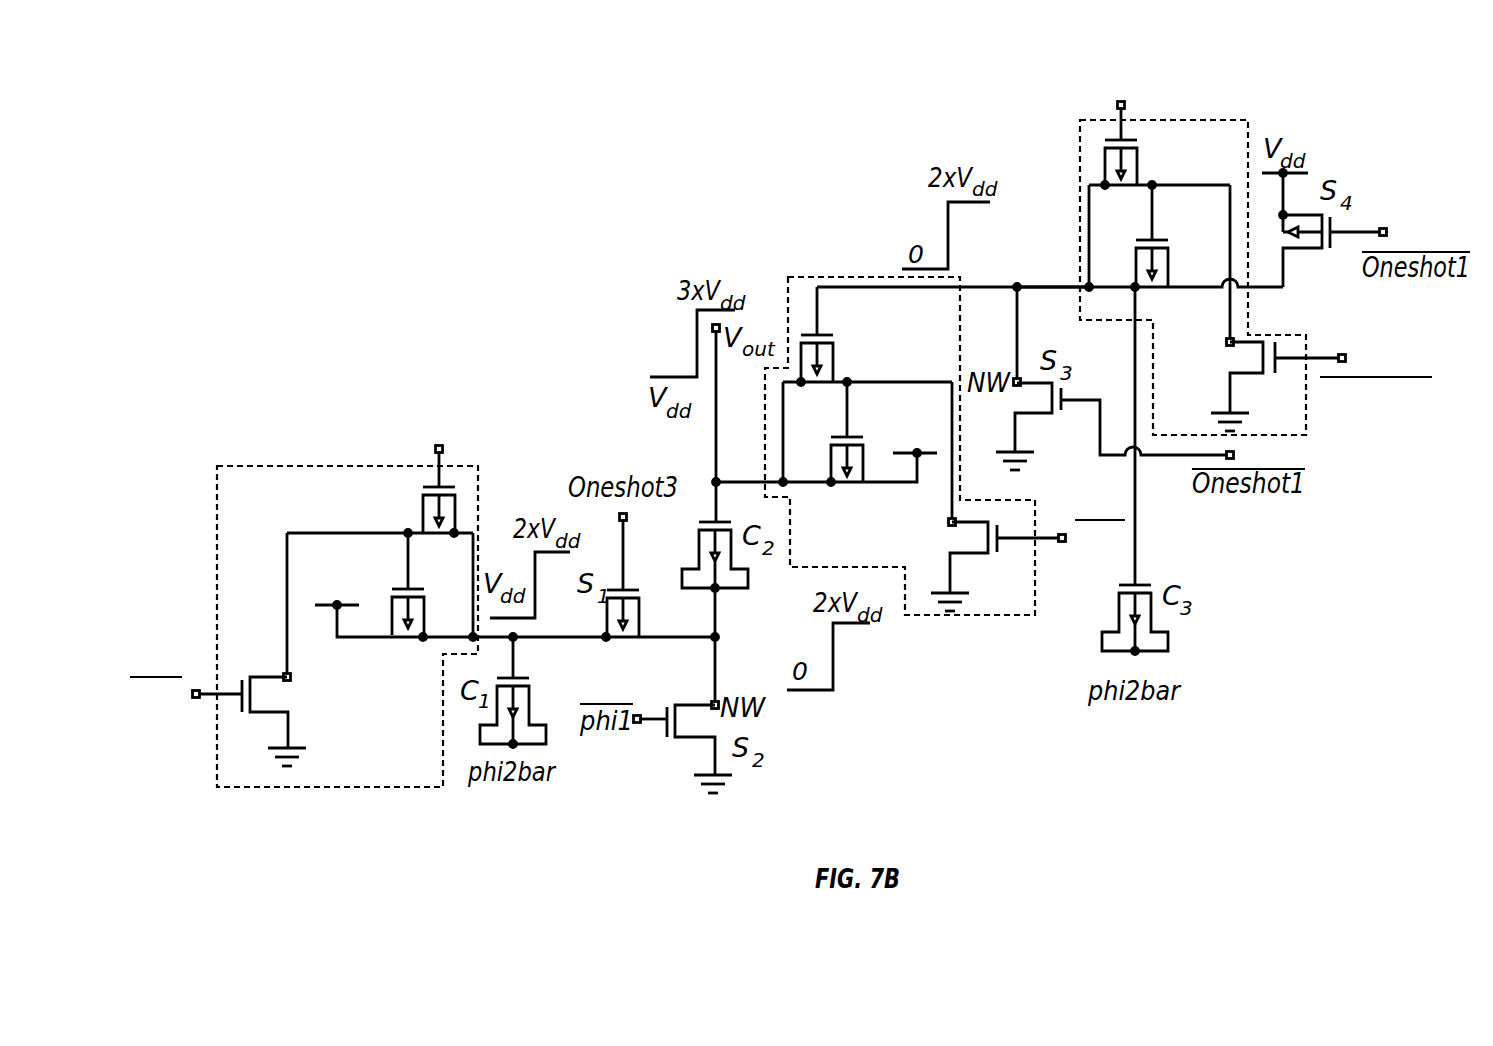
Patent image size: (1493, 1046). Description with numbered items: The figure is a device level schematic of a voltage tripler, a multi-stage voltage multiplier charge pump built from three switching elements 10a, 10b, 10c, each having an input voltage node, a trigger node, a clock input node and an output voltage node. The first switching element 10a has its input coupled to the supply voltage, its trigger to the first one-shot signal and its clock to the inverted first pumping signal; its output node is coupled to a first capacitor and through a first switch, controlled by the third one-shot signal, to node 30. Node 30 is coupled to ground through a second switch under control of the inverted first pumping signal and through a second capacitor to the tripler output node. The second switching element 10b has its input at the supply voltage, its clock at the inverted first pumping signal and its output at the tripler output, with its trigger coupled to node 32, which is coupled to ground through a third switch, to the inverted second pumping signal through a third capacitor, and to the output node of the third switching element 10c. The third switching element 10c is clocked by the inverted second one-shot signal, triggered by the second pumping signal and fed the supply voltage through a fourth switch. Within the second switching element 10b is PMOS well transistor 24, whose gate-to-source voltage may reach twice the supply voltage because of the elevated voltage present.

The first switching element 10a is at (281, 464).
The second switching element 10b is at (849, 274).
The third switching element 10c is at (1190, 118).
The PMOS well transistor 24 is at (829, 491).
The node 30 is at (720, 636).
The node 32 is at (1064, 283).